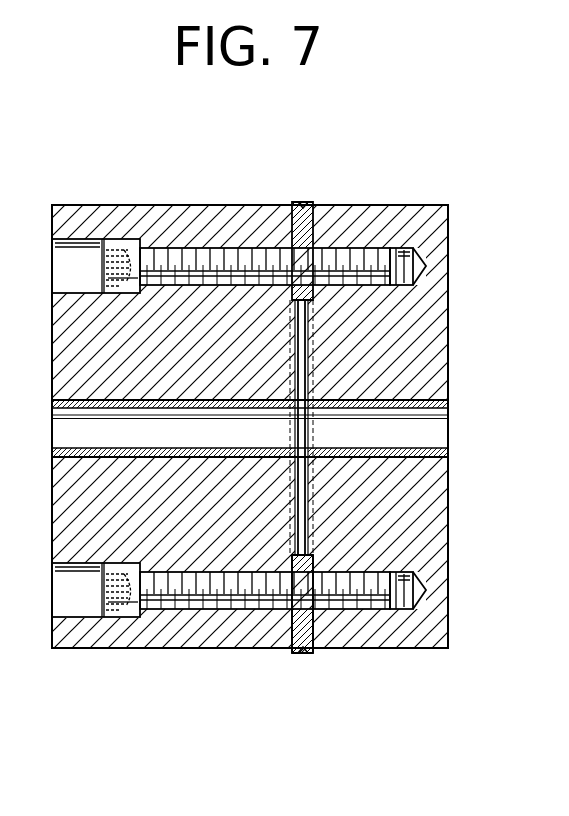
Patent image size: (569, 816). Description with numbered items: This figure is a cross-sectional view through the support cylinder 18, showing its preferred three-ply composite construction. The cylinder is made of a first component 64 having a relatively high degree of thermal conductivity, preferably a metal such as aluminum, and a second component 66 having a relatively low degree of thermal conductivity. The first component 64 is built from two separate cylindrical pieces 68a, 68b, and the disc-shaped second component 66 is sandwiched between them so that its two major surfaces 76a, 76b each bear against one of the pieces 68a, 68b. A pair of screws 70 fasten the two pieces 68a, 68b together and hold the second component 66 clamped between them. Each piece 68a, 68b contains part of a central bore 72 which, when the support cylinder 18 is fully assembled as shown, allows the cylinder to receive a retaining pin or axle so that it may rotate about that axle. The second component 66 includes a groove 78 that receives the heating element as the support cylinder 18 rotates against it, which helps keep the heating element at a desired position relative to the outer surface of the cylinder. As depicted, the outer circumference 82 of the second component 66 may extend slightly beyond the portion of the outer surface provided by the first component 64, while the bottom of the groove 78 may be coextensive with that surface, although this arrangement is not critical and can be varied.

The support cylinder 18 is at (92, 190).
The first component 64 is at (138, 660).
The second component 66 is at (340, 205).
The cylindrical piece 68a is at (137, 205).
The cylindrical piece 68b is at (420, 205).
The screws 70 is at (246, 252).
The central bore 72 is at (460, 428).
The major surface 76a is at (320, 635).
The major surface 76b is at (288, 640).
The groove 78 is at (298, 190).
The outer circumference 82 is at (308, 203).